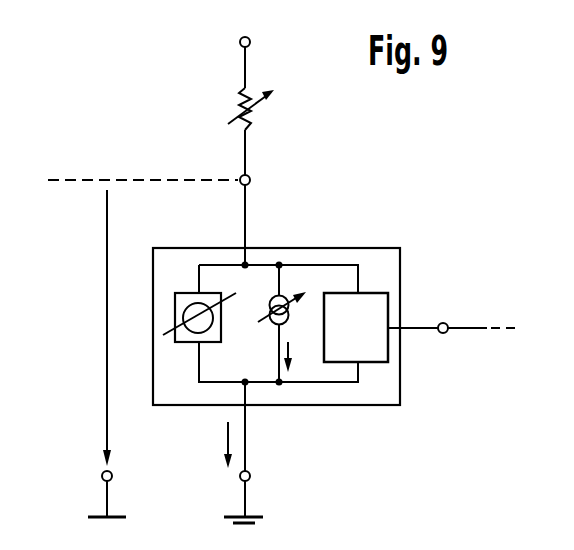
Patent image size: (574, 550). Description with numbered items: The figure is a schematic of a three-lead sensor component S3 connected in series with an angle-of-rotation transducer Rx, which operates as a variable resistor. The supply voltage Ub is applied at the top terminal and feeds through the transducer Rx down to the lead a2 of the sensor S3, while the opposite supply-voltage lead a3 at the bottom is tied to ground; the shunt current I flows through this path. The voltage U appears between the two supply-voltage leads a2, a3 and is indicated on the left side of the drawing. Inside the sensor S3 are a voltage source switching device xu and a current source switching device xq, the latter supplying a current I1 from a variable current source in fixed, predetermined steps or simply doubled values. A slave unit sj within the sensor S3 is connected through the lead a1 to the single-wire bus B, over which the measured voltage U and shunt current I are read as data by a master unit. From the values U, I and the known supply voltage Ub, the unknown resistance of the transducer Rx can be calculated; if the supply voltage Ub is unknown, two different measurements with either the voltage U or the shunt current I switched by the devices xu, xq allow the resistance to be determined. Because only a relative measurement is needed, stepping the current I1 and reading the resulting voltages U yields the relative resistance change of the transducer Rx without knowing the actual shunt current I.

The supply voltage Ub is at (244, 47).
The angle-of-rotation transducer Rx is at (238, 108).
The second lead a2 is at (247, 212).
The three-lead sensor component S3 is at (384, 248).
The voltage source switching device xu is at (177, 293).
The current source switching device xq is at (288, 314).
The current from variable current source I1 is at (288, 348).
The slave unit sj is at (377, 362).
The third lead a1 is at (427, 329).
The single-wire bus B is at (476, 327).
The third lead / supply-voltage lead a3 is at (246, 440).
The shunt current I is at (223, 438).
The voltage between the second and third leads U is at (107, 376).